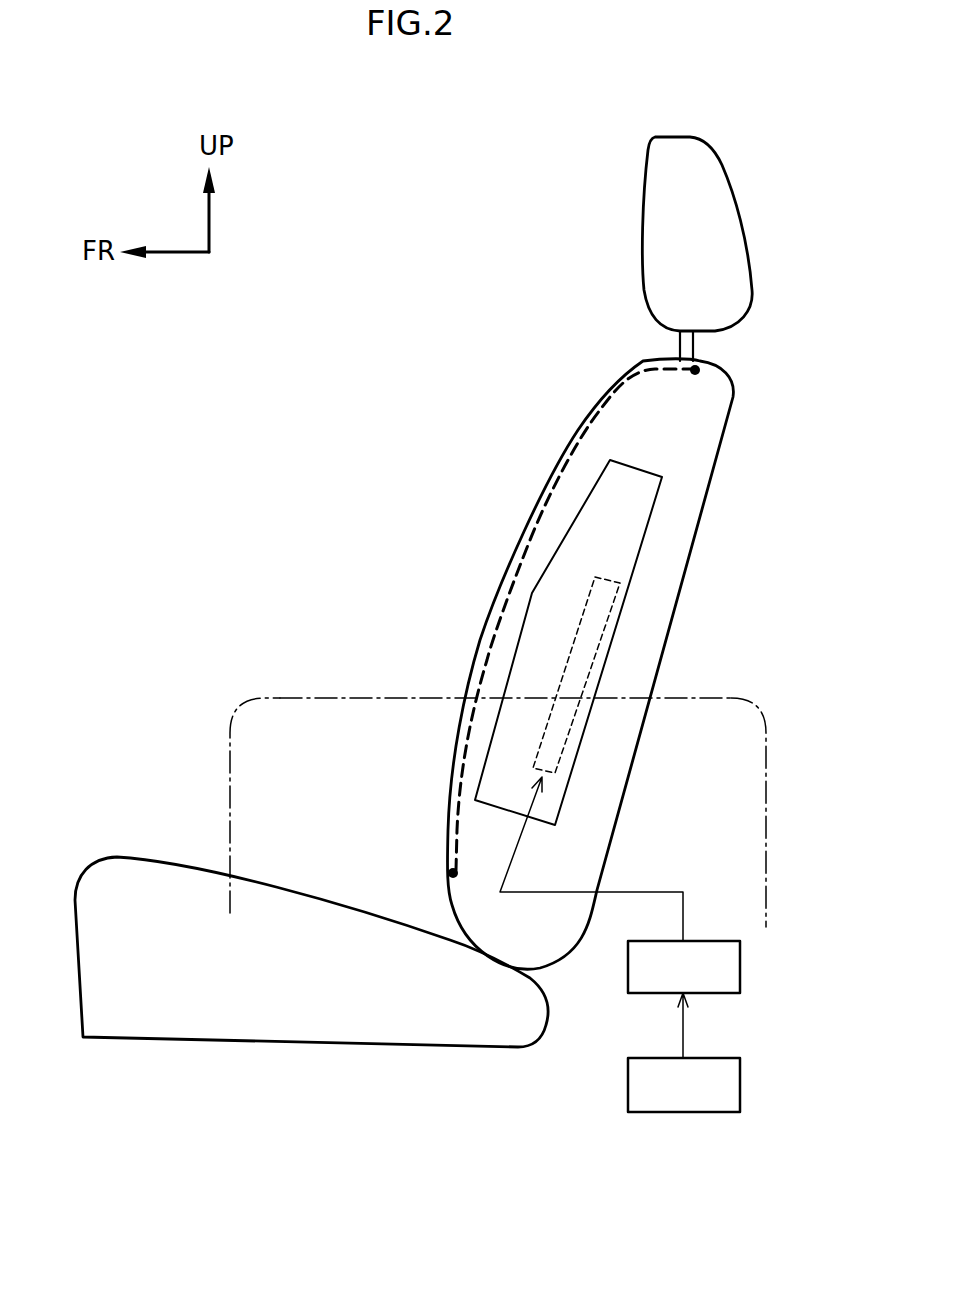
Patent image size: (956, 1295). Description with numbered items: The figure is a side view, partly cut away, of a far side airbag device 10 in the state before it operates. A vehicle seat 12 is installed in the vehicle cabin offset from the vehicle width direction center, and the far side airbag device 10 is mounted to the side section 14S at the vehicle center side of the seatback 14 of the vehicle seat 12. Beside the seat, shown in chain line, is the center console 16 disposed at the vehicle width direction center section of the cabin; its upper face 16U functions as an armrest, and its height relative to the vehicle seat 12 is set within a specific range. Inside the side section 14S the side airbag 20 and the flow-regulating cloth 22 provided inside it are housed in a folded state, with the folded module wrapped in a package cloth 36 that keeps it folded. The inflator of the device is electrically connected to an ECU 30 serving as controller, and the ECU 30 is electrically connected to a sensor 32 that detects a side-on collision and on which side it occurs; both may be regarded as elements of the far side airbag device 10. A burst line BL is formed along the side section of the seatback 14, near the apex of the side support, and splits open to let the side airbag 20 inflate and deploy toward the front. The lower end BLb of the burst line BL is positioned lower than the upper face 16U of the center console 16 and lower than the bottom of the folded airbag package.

The far side airbag device 10 is at (456, 565).
The vehicle seat 12 is at (163, 817).
The seatback 14 is at (572, 553).
The side section 14S is at (595, 447).
The center console 16 is at (498, 766).
The upper face 16U is at (300, 698).
The side airbag 20 is at (576, 675).
The flow-regulating cloth 22 is at (637, 562).
The package cloth 36 is at (645, 642).
The ECU 30 is at (742, 968).
The sensor 32 is at (742, 1085).
The burst line BL is at (527, 530).
The lower end BLb is at (453, 873).